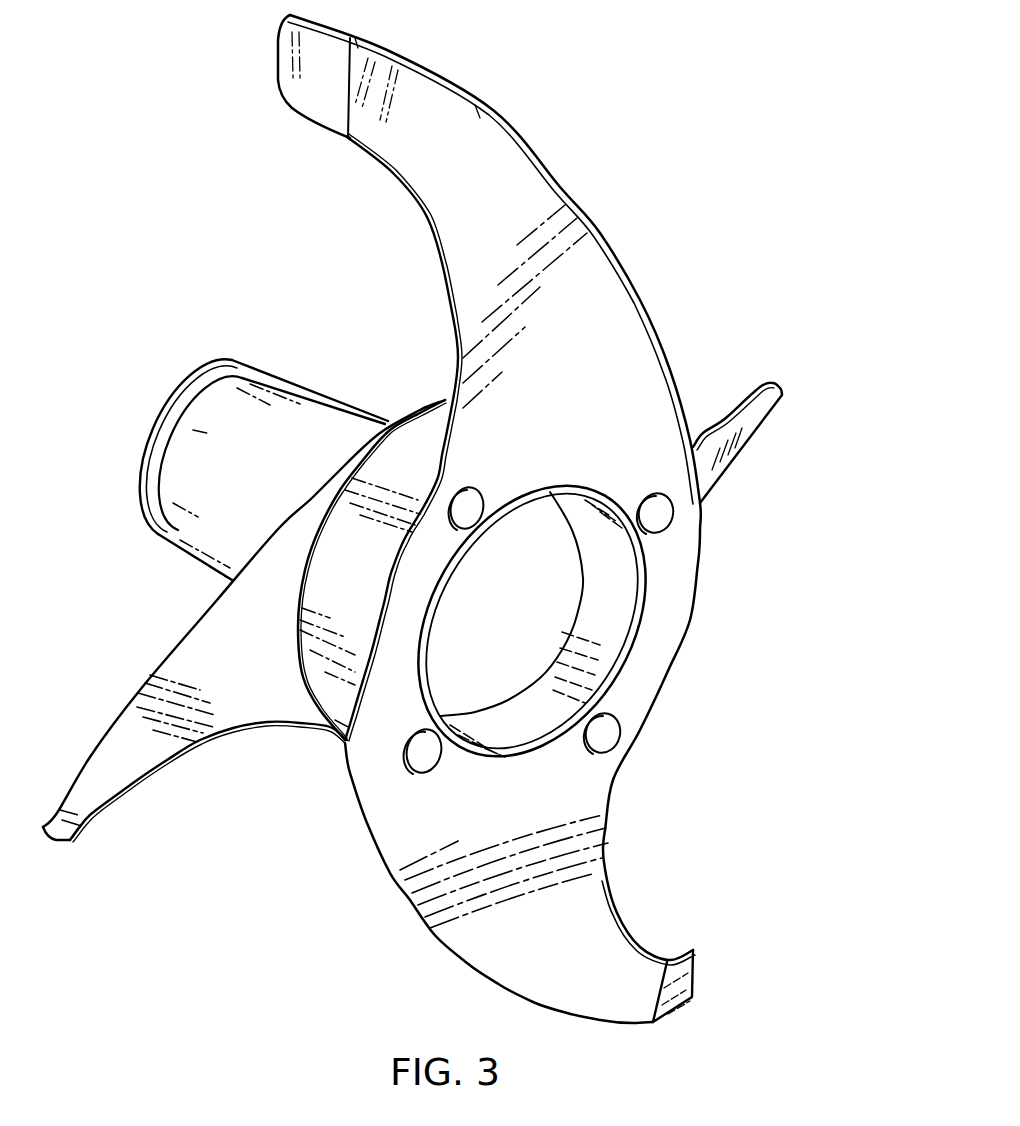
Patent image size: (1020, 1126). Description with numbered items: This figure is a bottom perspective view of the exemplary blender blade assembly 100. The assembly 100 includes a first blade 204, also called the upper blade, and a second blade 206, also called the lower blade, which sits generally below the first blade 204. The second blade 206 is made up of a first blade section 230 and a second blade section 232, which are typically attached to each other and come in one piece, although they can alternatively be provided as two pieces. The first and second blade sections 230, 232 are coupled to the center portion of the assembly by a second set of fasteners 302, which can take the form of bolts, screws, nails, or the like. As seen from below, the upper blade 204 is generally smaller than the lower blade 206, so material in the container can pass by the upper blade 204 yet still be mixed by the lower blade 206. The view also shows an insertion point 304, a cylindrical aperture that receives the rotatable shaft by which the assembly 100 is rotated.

The blender blade assembly 100 is at (158, 332).
The first blade 204 is at (153, 703).
The second blade 206 is at (497, 160).
The first blade section 230 is at (480, 237).
The second blade section 232 is at (547, 910).
The second set of fasteners 302 is at (472, 503).
The insertion point 304 is at (540, 603).